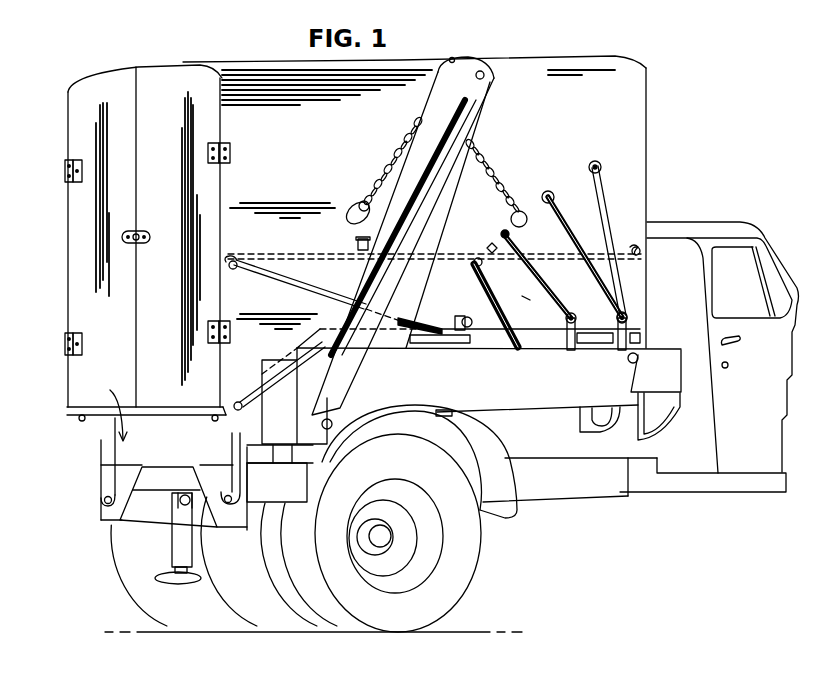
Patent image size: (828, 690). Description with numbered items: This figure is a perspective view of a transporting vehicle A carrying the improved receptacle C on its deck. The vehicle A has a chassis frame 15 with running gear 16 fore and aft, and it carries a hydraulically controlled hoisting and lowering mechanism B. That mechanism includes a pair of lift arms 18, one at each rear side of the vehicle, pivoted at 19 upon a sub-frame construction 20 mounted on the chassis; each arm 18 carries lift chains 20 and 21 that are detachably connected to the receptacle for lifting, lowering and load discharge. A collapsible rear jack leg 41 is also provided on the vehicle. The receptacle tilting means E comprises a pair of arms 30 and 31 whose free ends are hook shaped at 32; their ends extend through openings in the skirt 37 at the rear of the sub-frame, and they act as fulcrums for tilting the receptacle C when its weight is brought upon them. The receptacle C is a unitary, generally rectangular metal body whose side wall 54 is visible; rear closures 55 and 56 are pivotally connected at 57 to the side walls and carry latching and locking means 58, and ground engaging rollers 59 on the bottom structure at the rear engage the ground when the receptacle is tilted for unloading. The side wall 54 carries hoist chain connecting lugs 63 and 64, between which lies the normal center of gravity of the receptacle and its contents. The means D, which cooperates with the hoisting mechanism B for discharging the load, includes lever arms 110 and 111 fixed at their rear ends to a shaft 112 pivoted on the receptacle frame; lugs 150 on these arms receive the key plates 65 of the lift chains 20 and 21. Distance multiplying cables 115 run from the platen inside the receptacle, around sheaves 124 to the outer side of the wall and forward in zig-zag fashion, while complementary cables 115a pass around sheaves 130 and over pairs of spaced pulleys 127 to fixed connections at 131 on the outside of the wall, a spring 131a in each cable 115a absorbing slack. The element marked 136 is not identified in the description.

The chassis frame 15 is at (563, 493).
The running gear 16 is at (382, 623).
The lift arms 18 is at (467, 108).
The pivot 19 is at (333, 420).
The sub-frame construction 20 is at (398, 162).
The lift chain 21 is at (487, 163).
The trip arm 30 is at (112, 467).
The trip arm 31 is at (232, 466).
The hook shaped end 32 is at (102, 504).
The skirt 37 is at (180, 455).
The rear jack leg 41 is at (180, 527).
The side wall 54 is at (628, 150).
The rear closure 55 is at (88, 115).
The rear closure 56 is at (205, 132).
The pivotal connection 57 is at (231, 153).
The latching and locking means 58 is at (150, 230).
The ground engaging rollers 59 is at (82, 424).
The hoist chain connecting lug 63 is at (348, 223).
The hoist chain connecting lug 64 is at (536, 274).
The key plates 65 is at (362, 200).
The lever arm 110 is at (470, 268).
The lever arm 111 is at (590, 337).
The shaft 112 is at (238, 402).
The cable 115 is at (292, 287).
The complementary cable 115a is at (612, 188).
The pulley or sheave 124 is at (239, 258).
The pulleys or sheaves 127 is at (549, 191).
The pulleys or sheaves 130 is at (637, 248).
The fixed connection 131 is at (497, 303).
The spring 131a is at (516, 289).
The pin 136 is at (490, 243).
The lugs 150 is at (468, 316).
The vehicle A is at (701, 474).
The hydraulically controlled hoisting and lowering mechanism B is at (420, 243).
The receptacle C is at (250, 80).
The means cooperating with hoisting means D is at (546, 309).
The receptacle tilting means E is at (112, 405).